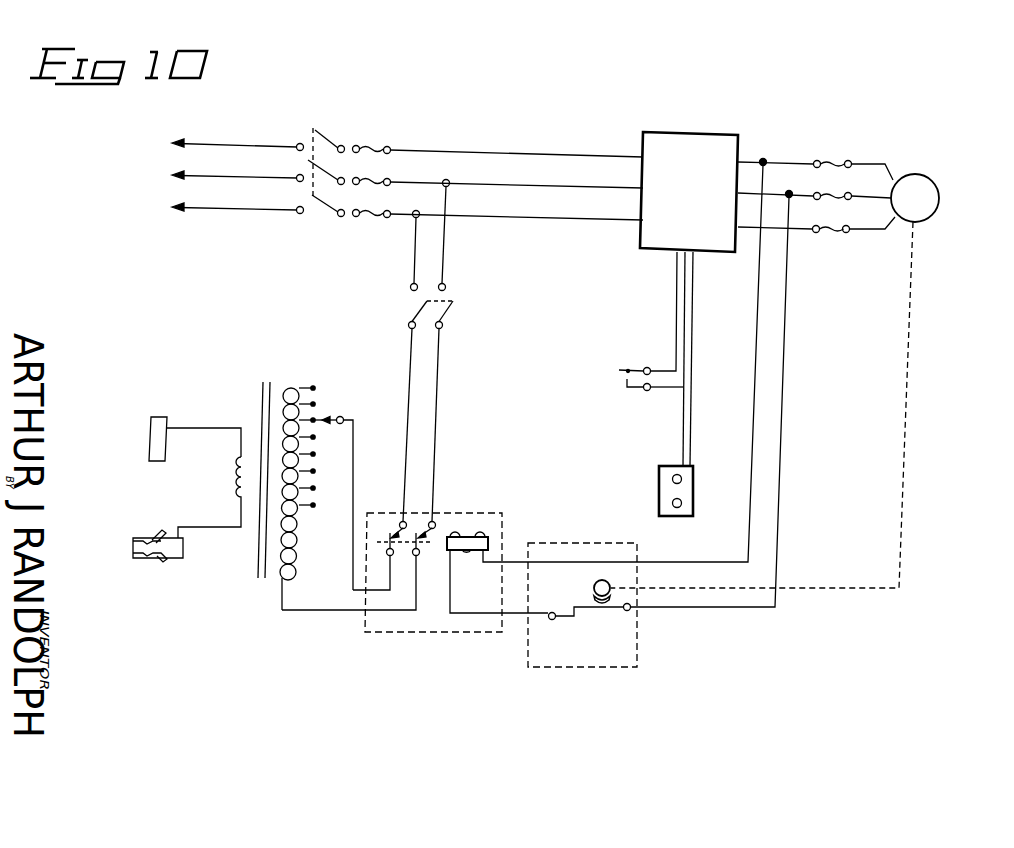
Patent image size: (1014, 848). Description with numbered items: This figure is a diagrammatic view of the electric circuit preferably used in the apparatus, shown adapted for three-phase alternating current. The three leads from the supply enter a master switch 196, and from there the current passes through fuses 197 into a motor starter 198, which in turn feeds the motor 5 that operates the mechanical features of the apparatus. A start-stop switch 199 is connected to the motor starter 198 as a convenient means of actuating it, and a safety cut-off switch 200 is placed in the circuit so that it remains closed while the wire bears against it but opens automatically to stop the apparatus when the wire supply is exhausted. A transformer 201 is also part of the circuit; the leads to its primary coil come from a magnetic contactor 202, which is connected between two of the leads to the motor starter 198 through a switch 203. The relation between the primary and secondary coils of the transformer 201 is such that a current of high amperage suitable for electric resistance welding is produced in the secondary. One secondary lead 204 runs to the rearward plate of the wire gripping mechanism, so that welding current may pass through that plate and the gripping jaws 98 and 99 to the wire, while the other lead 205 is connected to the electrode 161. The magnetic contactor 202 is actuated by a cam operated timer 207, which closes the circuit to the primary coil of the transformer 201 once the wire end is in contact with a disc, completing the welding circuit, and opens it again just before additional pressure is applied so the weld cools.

The motor 5 is at (935, 184).
The gripping jaw 98 is at (141, 560).
The gripping jaw 99 is at (141, 533).
The electrode 161 is at (155, 432).
The master switch 196 is at (332, 137).
The fuses 197 is at (362, 215).
The motor starter 198 is at (706, 140).
The start-stop switch 199 is at (665, 500).
The safety cut-off switch 200 is at (640, 368).
The transformer 201 is at (284, 384).
The magnetic contactor 202 is at (432, 620).
The switch 203 is at (445, 317).
The lead 204 is at (205, 529).
The lead 205 is at (211, 428).
The cam operated timer 207 is at (625, 632).